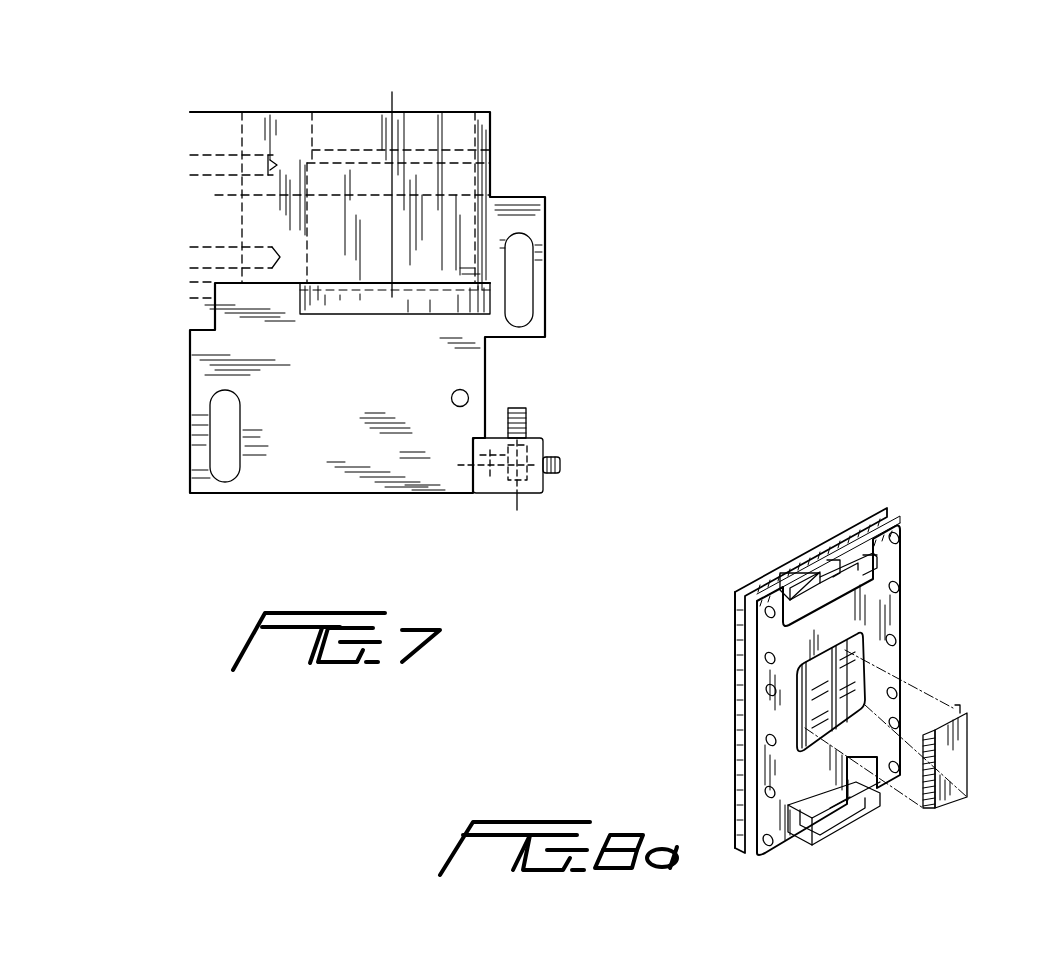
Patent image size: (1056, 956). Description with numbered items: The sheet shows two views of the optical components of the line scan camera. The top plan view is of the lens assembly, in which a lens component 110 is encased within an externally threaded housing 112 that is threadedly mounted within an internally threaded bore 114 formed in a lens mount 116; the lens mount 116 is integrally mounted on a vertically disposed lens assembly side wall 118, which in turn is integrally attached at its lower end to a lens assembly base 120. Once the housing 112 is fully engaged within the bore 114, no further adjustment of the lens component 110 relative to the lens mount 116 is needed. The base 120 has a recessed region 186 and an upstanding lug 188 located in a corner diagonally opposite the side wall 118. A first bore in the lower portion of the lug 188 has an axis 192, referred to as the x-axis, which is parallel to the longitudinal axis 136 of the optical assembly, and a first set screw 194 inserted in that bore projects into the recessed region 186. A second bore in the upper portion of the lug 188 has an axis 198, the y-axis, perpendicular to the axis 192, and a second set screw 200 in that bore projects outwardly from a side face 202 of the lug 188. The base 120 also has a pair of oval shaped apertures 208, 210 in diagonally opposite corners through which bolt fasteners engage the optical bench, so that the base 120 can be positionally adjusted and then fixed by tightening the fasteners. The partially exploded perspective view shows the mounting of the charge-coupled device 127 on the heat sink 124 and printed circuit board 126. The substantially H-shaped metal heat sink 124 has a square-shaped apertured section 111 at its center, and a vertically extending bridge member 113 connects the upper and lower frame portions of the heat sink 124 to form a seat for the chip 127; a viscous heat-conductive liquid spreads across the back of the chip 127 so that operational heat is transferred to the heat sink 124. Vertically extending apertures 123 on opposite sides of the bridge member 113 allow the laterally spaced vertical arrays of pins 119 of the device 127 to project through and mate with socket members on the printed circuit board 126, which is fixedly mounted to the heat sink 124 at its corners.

In FIG. 7, the lens component 110 is at (372, 303).
In FIG. 7, the externally threaded housing 112 is at (473, 183).
In FIG. 7, the internally threaded bore 114 is at (480, 213).
In FIG. 7, the lens mount 116 is at (288, 125).
In FIG. 7, the lens assembly side wall 118 is at (212, 213).
In FIG. 7, the lens assembly base 120 is at (342, 423).
In FIG. 7, the longitudinal axis 136 is at (393, 103).
In FIG. 7, the recessed region 186 is at (512, 360).
In FIG. 7, the upstanding lug 188 is at (490, 487).
In FIG. 7, the axis 192 is at (517, 510).
In FIG. 7, the first externally threaded set screw 194 is at (528, 417).
In FIG. 7, the axis 198 is at (463, 465).
In FIG. 7, the second externally threaded set screw 200 is at (550, 477).
In FIG. 7, the side face 202 is at (543, 448).
In FIG. 7, the oval shaped aperture 208 is at (523, 275).
In FIG. 7, the oval shaped aperture 210 is at (222, 433).
In FIG. 8A, the apertured section 111 is at (848, 627).
In FIG. 8A, the bridge member 113 is at (800, 732).
In FIG. 8A, the pins 119 is at (958, 708).
In FIG. 8A, the vertically extending apertures 123 is at (798, 687).
In FIG. 8A, the heat sink 124 is at (897, 603).
In FIG. 8A, the printed circuit board 126 is at (848, 525).
In FIG. 8A, the charge-coupled device 127 is at (960, 750).